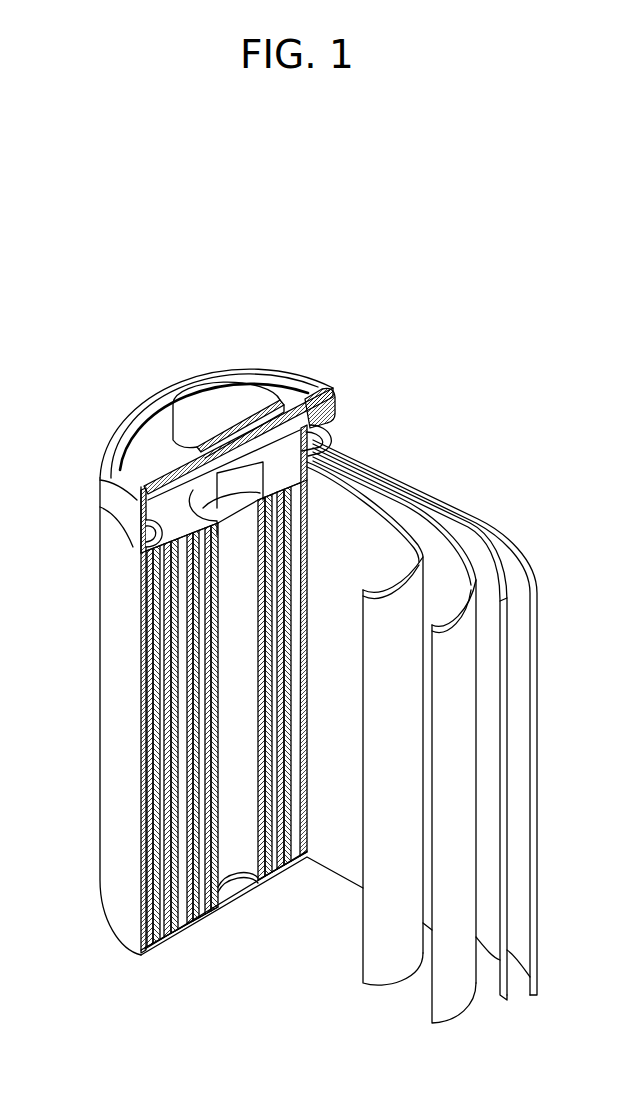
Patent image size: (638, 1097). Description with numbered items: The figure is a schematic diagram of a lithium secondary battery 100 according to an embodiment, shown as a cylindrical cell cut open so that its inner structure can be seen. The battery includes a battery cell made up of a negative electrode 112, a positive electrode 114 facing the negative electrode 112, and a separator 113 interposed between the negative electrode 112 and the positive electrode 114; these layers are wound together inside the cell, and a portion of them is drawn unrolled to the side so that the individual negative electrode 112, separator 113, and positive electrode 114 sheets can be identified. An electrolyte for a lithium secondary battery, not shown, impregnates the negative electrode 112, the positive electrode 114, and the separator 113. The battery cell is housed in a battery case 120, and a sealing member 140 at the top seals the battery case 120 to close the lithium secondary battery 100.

The lithium secondary battery 100 is at (321, 347).
The negative electrode 112 is at (530, 578).
The separator 113 is at (357, 500).
The positive electrode 114 is at (443, 545).
The battery case 120 is at (113, 817).
The sealing member 140 is at (197, 408).